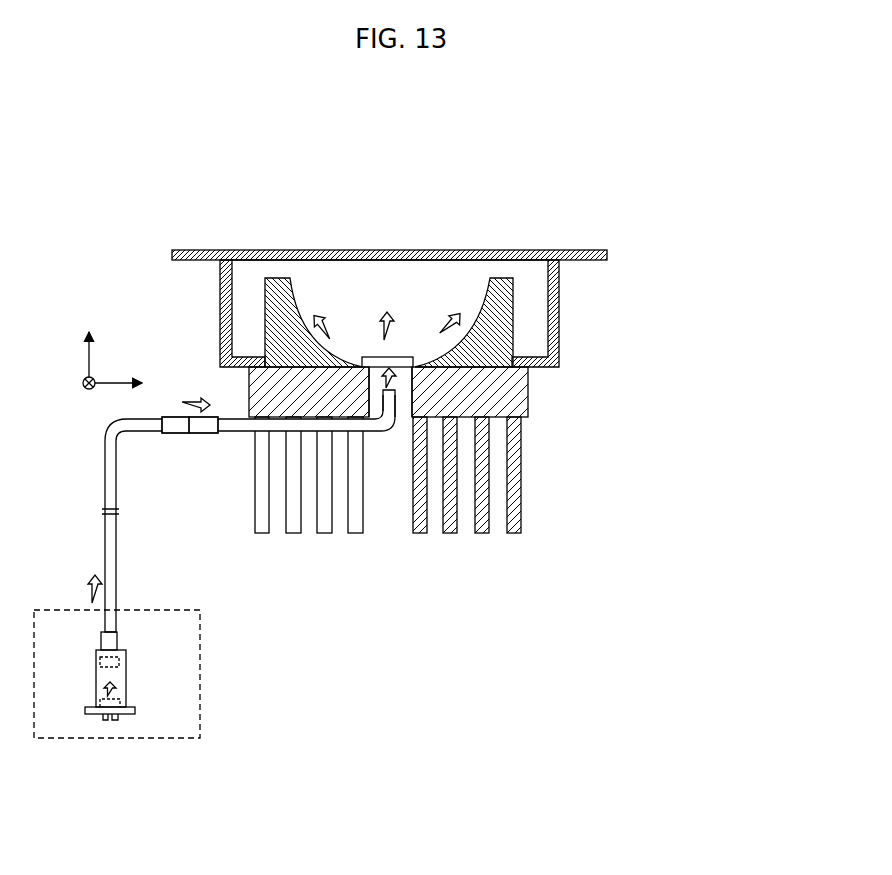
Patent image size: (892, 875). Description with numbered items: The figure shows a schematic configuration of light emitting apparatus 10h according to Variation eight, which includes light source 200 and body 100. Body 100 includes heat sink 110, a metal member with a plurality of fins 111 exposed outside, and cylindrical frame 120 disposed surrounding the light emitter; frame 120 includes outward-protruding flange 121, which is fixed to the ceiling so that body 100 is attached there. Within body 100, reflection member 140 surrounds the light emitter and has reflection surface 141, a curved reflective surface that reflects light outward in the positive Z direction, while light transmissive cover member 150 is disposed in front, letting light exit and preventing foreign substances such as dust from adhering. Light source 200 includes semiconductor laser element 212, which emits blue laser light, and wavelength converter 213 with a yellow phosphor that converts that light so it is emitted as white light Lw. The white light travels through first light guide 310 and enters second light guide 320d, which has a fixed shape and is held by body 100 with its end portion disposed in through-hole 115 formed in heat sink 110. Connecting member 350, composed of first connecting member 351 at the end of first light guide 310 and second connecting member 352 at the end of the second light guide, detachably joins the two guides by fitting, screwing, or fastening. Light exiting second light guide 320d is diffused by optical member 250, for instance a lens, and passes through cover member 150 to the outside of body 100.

The light emitting apparatus 10h is at (641, 217).
The body 100 is at (539, 491).
The heat sink 110 is at (530, 398).
The fins 111 is at (452, 534).
The through-hole 115 is at (402, 380).
The frame 120 is at (560, 309).
The flange 121 is at (584, 258).
The reflection member 140 is at (265, 323).
The reflection surface 141 is at (483, 306).
The cover member 150 is at (487, 250).
The light source 200 is at (200, 716).
The semiconductor laser element 212 is at (125, 703).
The wavelength converter 213 is at (119, 658).
The optical member 250 is at (404, 357).
The first light guide 310 is at (105, 491).
The second light guide 320d is at (376, 432).
The connecting member 350 is at (228, 495).
The first connecting member 351 is at (175, 434).
The second connecting member 352 is at (203, 434).